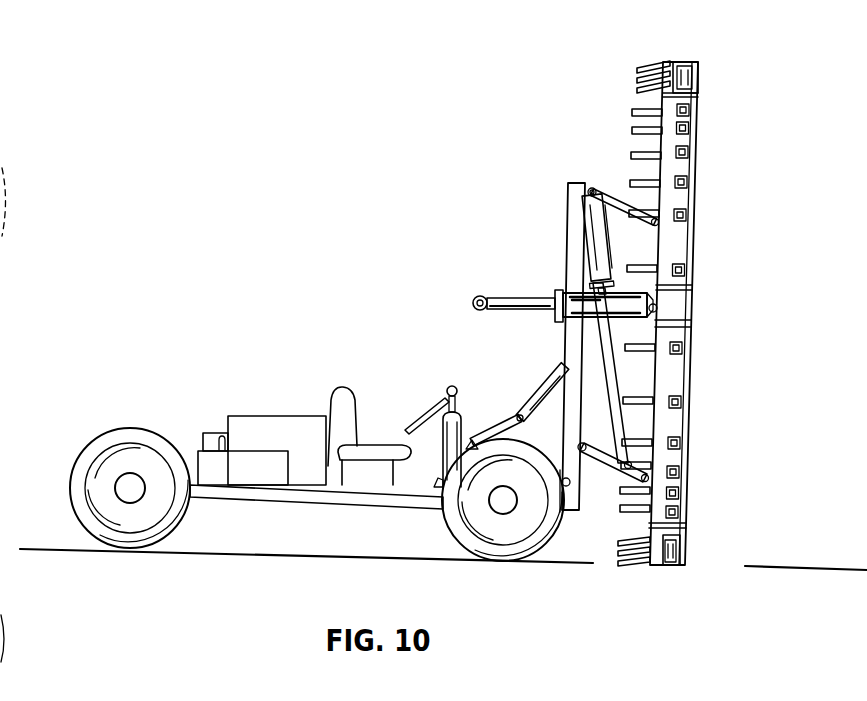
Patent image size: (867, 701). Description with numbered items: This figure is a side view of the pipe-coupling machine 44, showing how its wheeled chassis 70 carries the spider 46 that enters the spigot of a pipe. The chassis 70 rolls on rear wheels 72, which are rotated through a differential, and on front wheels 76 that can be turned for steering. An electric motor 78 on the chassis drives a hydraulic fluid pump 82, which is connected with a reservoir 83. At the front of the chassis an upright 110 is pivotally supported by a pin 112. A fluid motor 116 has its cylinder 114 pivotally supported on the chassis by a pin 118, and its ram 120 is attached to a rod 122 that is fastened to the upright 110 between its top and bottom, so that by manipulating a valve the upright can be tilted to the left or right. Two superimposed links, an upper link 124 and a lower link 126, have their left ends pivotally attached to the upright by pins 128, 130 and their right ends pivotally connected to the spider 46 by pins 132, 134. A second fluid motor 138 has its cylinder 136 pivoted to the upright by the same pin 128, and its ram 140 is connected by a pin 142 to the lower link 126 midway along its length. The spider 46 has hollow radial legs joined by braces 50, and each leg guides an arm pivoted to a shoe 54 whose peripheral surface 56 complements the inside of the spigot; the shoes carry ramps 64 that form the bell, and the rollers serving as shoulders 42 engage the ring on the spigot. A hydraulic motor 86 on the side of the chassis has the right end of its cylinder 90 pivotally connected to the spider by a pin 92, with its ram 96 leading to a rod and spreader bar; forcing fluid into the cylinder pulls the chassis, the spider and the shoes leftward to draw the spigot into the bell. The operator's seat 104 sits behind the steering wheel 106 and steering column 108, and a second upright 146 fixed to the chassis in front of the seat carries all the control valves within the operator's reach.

The shoulders 42 is at (700, 68).
The machine 44 is at (158, 331).
The spider 46 is at (768, 327).
The braces 50 is at (683, 297).
The shoe 54 is at (700, 78).
The peripheral surface 56 is at (688, 137).
The ramps 64 is at (633, 112).
The chassis 70 is at (298, 497).
The rear wheels 72 is at (79, 525).
The front wheels 76 is at (453, 539).
The electric motor 78 is at (264, 416).
The fluid pump 82 is at (213, 432).
The reservoir 83 is at (227, 477).
The hydraulic motor 86 is at (557, 320).
The cylinder 90 is at (578, 318).
The pins 92 is at (680, 313).
The ram 96 is at (523, 300).
The operator's seat 104 is at (338, 385).
The steering wheel 106 is at (448, 393).
The steering column 108 is at (418, 422).
The upright 110 is at (567, 205).
The pin 112 is at (572, 487).
The cylinder 114 is at (464, 426).
The fluid motor 116 is at (473, 438).
The pin 118 is at (434, 483).
The ram 120 is at (512, 431).
The rod 122 is at (532, 398).
The upper link 124 is at (624, 205).
The lower link 126 is at (605, 453).
The pin 128 is at (592, 188).
The pin 130 is at (582, 452).
The pin 132 is at (658, 224).
The pin 134 is at (648, 481).
The cylinder 136 is at (590, 238).
The fluid motor 138 is at (612, 240).
The ram 140 is at (608, 358).
The pin 142 is at (632, 467).
The upright 146 is at (442, 448).